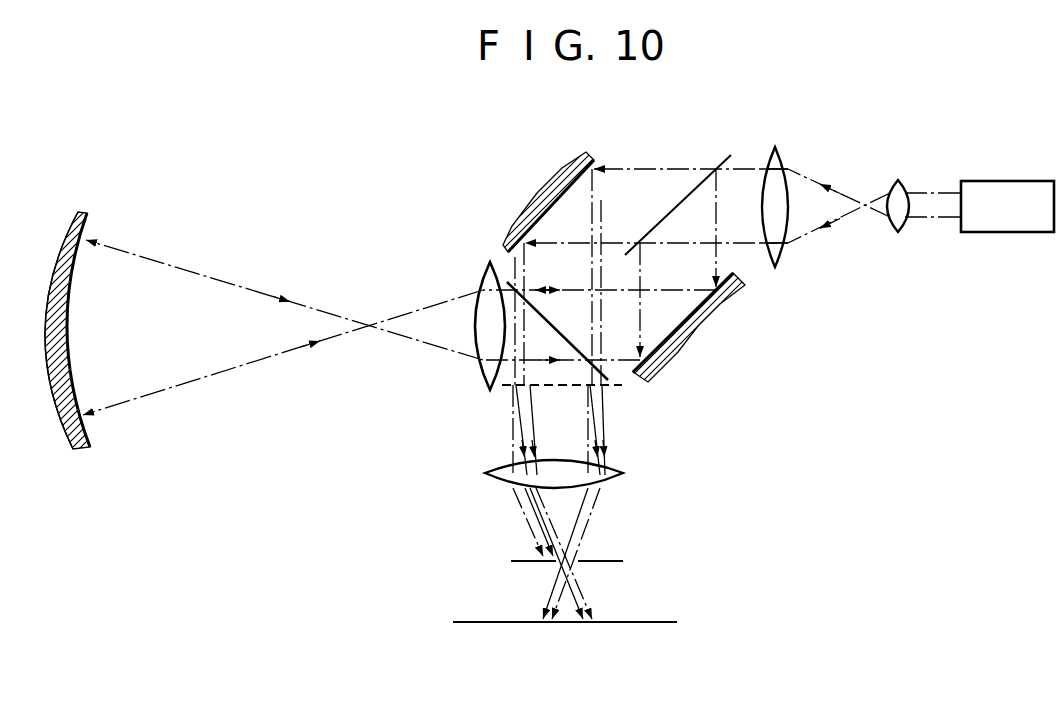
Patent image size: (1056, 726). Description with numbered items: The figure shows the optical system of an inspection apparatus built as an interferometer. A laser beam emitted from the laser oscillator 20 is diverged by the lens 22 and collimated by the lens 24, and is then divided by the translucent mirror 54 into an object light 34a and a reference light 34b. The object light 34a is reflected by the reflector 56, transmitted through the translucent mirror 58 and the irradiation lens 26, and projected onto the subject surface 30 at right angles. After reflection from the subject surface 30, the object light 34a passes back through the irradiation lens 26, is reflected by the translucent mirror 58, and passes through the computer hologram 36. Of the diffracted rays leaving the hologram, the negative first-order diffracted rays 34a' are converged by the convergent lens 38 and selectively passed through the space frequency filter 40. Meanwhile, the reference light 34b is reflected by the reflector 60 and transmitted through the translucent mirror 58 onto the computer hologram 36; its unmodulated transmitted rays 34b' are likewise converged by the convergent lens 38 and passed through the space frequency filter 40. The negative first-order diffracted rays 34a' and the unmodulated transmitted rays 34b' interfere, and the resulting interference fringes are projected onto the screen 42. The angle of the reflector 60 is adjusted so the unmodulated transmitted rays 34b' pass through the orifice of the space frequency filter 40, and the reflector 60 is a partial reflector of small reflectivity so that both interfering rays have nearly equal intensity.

The laser oscillator 20 is at (1022, 233).
The lens 22 is at (899, 182).
The lens 24 is at (782, 162).
The irradiation lens 26 is at (479, 284).
The subject surface 30 is at (92, 437).
The object light 34a is at (643, 264).
The reference light 34b is at (651, 245).
The negative first-order diffracted rays 34a' is at (559, 430).
The unmodulated transmitted rays 34b' is at (559, 430).
The computer hologram 36 is at (622, 386).
The convergent lens 38 is at (500, 483).
The space frequency filter 40 is at (615, 560).
The screen 42 is at (655, 625).
The translucent mirror 54 is at (731, 152).
The reflector 56 is at (713, 318).
The translucent mirror 58 is at (508, 276).
The reflector 60 is at (565, 172).